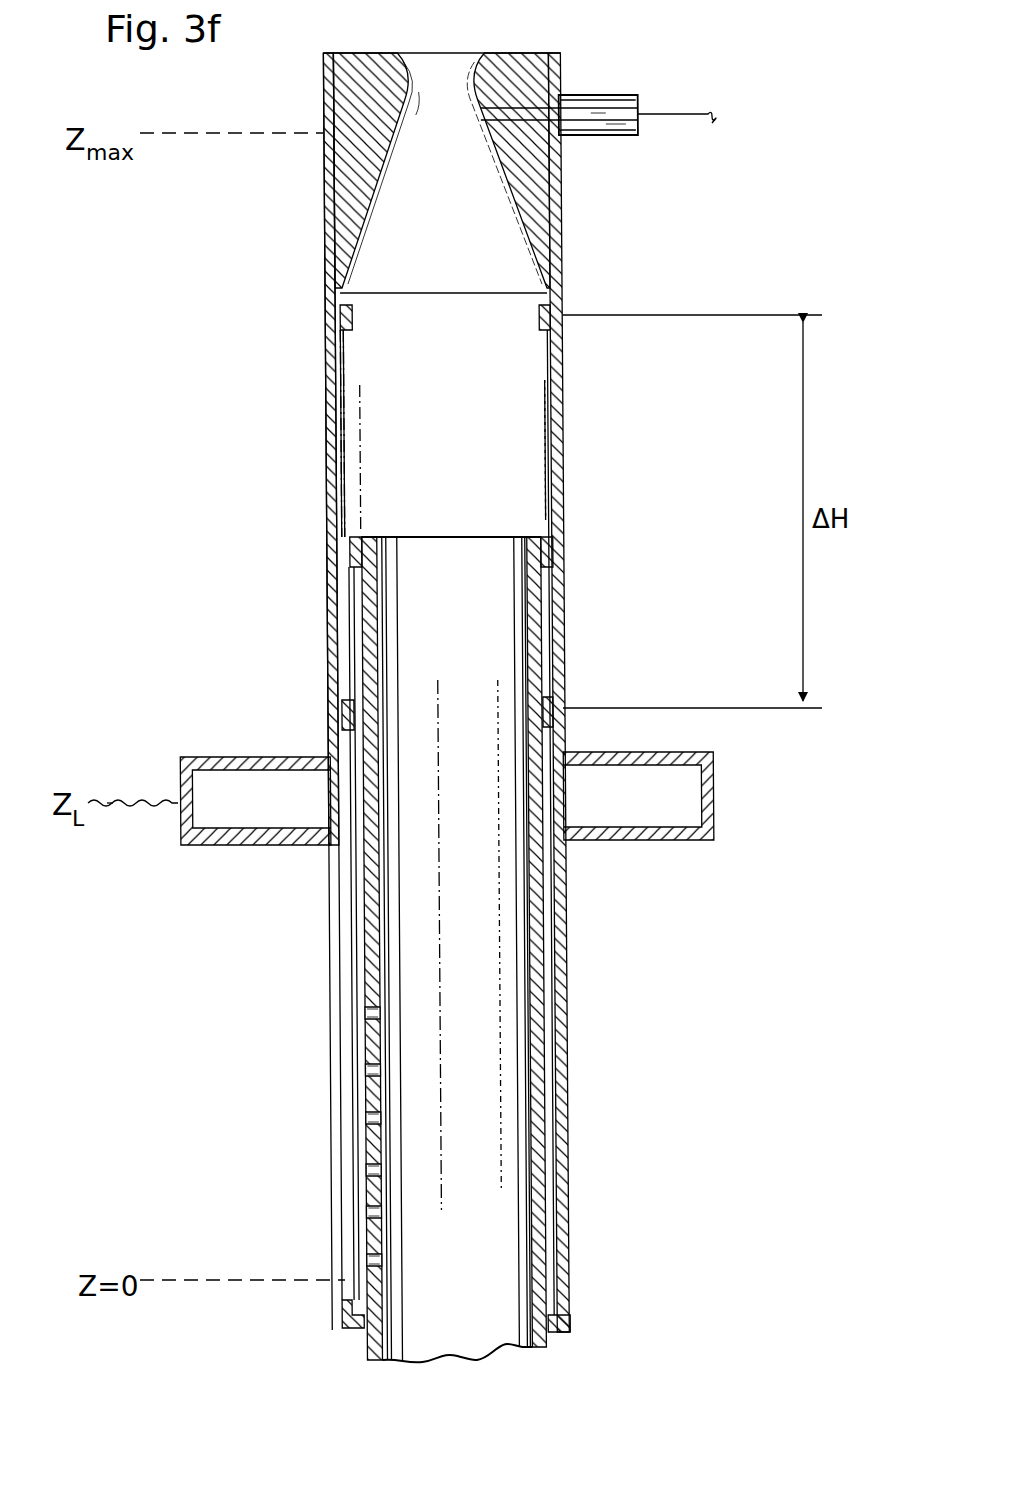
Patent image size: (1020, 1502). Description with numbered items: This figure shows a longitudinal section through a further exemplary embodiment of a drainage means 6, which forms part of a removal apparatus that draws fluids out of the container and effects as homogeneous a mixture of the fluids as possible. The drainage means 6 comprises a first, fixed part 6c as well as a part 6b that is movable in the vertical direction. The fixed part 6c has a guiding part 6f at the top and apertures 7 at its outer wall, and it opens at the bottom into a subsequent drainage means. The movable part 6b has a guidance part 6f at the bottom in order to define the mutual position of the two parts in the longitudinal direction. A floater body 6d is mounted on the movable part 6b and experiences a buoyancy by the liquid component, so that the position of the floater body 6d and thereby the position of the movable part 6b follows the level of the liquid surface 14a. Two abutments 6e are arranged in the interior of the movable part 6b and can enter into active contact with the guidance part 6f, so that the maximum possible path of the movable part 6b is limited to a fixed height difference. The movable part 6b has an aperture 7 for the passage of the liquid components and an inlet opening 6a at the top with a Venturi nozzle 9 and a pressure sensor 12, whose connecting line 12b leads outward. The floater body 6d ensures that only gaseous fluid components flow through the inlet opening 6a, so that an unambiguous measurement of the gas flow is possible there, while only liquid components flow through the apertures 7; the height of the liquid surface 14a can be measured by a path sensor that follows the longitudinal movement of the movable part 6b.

The drainage means 6 is at (779, 240).
The inlet opening 6a is at (440, 5).
The movable part 6b is at (556, 500).
The fixed part 6c is at (540, 633).
The floater body 6d is at (262, 762).
The abutments 6e is at (338, 318).
The guidance part 6f is at (347, 550).
The apertures 7 is at (333, 928).
The Venturi nozzle 9 is at (340, 68).
The pressure sensor 12 is at (595, 108).
The connecting line 12b is at (683, 113).
The liquid surface 14a is at (113, 797).